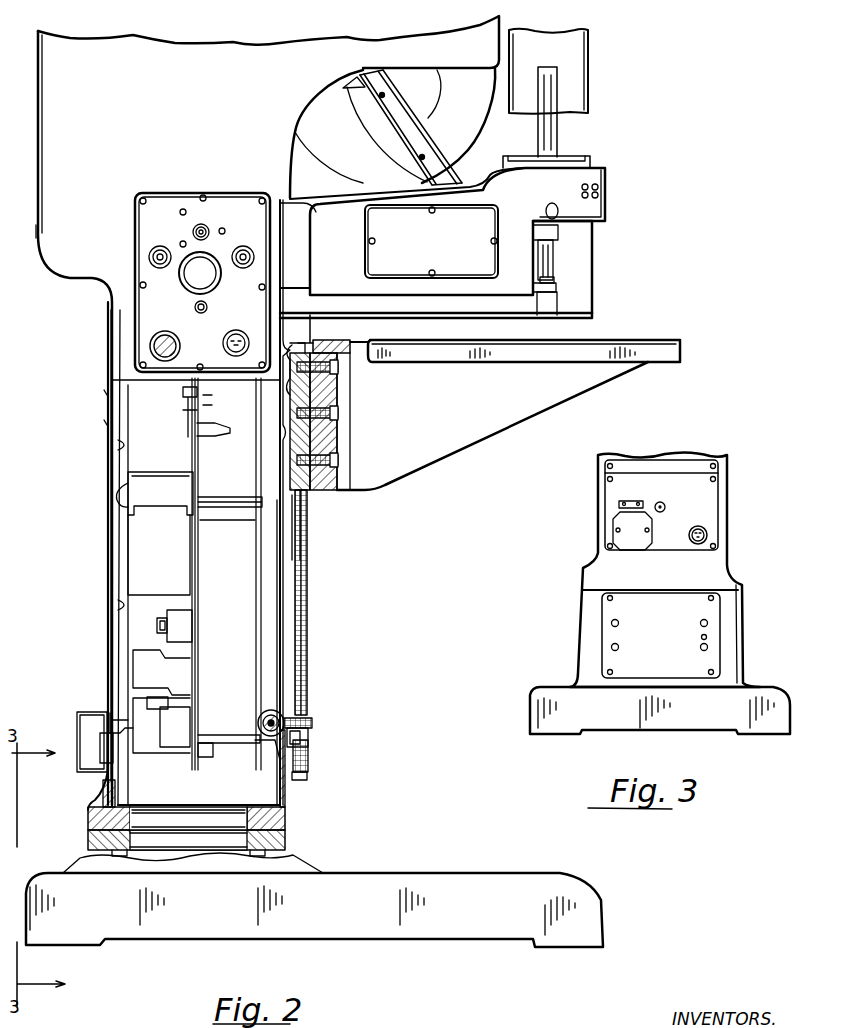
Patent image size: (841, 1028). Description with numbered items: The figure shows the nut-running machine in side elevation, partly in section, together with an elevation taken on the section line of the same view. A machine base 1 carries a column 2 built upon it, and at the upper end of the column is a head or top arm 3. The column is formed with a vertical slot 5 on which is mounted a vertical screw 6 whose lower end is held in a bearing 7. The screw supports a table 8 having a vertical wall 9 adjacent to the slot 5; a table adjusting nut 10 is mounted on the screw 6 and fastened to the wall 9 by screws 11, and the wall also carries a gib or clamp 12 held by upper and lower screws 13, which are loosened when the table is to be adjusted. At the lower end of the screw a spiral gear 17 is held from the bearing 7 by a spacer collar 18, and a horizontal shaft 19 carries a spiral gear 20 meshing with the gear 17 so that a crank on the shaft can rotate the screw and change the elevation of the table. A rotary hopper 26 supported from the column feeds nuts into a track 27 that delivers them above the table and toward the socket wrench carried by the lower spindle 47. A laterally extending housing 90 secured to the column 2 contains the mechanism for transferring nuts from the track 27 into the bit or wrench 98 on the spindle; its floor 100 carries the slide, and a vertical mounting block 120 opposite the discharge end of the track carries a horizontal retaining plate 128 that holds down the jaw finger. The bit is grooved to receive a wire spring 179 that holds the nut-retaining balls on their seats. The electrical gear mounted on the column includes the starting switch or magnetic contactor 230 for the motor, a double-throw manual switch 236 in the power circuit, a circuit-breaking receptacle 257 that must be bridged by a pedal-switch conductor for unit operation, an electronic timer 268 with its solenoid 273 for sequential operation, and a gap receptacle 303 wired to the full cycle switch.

In FIG. 2, the machine base 1 is at (453, 882).
In FIG. 3, the machine base 1 is at (537, 690).
In FIG. 2, the column 2 is at (240, 575).
In FIG. 3, the column 2 is at (598, 485).
In FIG. 2, the head or top arm 3 is at (491, 35).
In FIG. 2, the vertical slot 5 is at (296, 552).
In FIG. 2, the vertical screw 6 is at (308, 590).
In FIG. 2, the bearing 7 is at (308, 750).
In FIG. 2, the table 8 is at (463, 445).
In FIG. 2, the vertical wall 9 is at (330, 348).
In FIG. 2, the table adjusting nut 10 is at (292, 380).
In FIG. 2, the screws 11 is at (338, 367).
In FIG. 2, the gib or clamp 12 is at (300, 490).
In FIG. 2, the upper and lower screws 13 is at (338, 414).
In FIG. 2, the spiral gear 17 is at (310, 715).
In FIG. 2, the spacer collar 18 is at (308, 735).
In FIG. 2, the horizontal shaft 19 is at (277, 710).
In FIG. 2, the spiral gear 20 is at (277, 743).
In FIG. 2, the rotary hopper 26 is at (342, 155).
In FIG. 2, the track 27 is at (447, 165).
In FIG. 2, the lower spindle 47 is at (552, 128).
In FIG. 2, the laterally extending housing 90 is at (567, 182).
In FIG. 2, the bit or wrench 98 is at (555, 252).
In FIG. 2, the floor 100 is at (477, 318).
In FIG. 2, the vertical mounting block 120 is at (560, 305).
In FIG. 2, the retaining plate 128 is at (555, 289).
In FIG. 2, the wire spring 179 is at (552, 276).
In FIG. 2, the starting switch or magnetic contactor 230 is at (148, 757).
In FIG. 2, the double-throw manual switch 236 is at (148, 350).
In FIG. 2, the circuit-breaking receptacle 257 is at (95, 735).
In FIG. 3, the circuit-breaking receptacle 257 is at (705, 532).
In FIG. 2, the electronic timer 268 is at (130, 575).
In FIG. 2, the solenoid 273 is at (190, 629).
In FIG. 2, the gap receptacle 303 is at (250, 338).